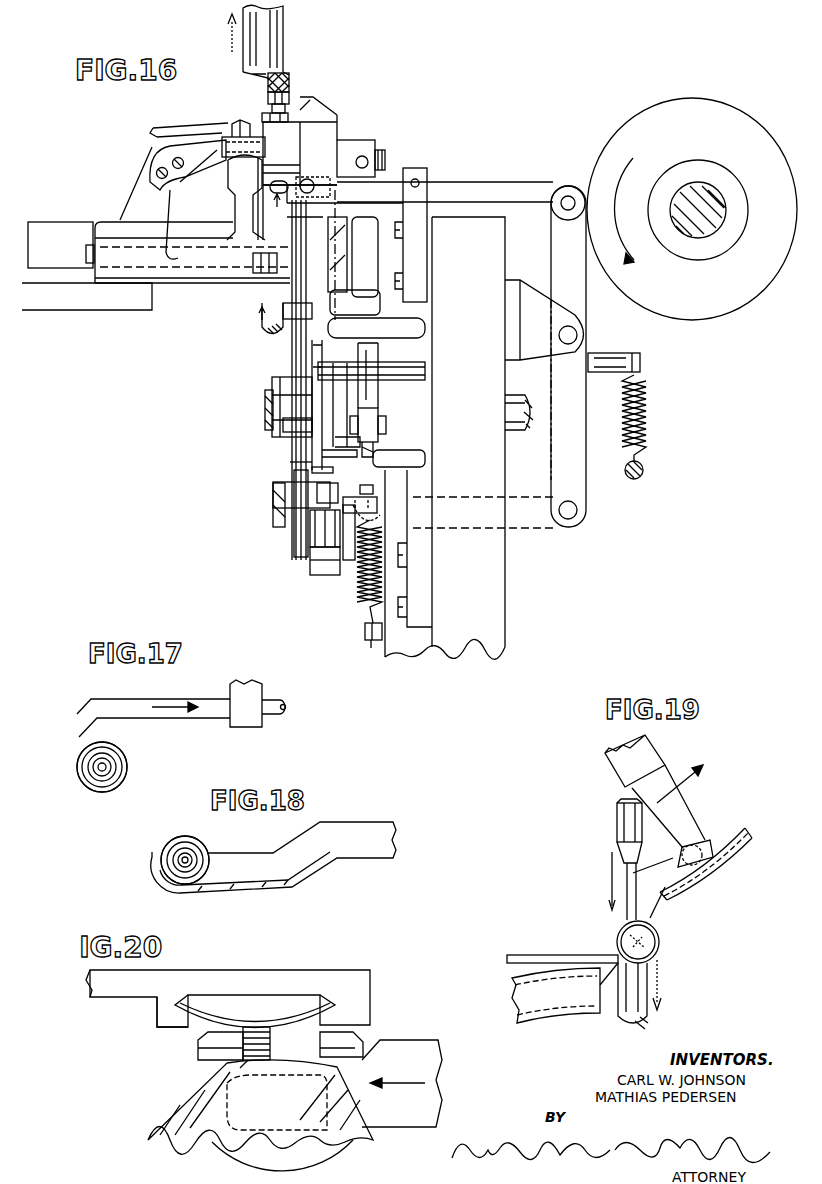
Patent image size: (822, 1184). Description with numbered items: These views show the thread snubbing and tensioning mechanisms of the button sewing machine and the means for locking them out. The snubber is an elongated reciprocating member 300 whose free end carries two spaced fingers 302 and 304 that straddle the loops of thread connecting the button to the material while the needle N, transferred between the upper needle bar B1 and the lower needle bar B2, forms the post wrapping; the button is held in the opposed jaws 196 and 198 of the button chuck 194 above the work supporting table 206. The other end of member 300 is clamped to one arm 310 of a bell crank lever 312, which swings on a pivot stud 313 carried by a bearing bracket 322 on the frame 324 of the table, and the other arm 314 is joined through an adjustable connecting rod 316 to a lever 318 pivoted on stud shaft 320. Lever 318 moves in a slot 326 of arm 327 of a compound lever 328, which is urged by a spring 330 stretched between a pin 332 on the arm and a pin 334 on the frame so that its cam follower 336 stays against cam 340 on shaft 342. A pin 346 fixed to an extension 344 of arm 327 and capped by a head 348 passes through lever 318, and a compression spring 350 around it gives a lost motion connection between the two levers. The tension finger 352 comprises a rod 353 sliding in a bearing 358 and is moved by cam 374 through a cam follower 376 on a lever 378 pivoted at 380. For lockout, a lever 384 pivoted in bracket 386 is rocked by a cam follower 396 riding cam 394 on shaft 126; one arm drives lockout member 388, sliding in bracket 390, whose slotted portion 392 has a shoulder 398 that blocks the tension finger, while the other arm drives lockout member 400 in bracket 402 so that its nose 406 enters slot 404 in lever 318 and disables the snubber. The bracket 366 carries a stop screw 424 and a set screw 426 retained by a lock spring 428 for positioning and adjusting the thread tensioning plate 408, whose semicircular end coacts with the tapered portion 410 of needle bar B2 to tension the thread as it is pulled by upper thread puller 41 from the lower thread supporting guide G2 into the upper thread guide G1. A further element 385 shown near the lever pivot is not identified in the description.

In FIG. 16, the upper needle bar B1 is at (268, 40).
In FIG. 19, the upper needle bar B1 is at (626, 827).
In FIG. 16, the stop screw 424 is at (268, 97).
In FIG. 16, the adjustable set screw 426 is at (289, 82).
In FIG. 16, the lock spring 428 is at (316, 101).
In FIG. 16, the bracket 366 is at (302, 163).
In FIG. 16, the shoulder 398 is at (333, 126).
In FIG. 16, the snubber member 300 is at (253, 110).
In FIG. 20, the snubber member 300 is at (413, 1062).
In FIG. 16, the slotted portion 392 is at (298, 185).
In FIG. 16, the bracket 390 is at (421, 176).
In FIG. 16, the lockout member 388 is at (493, 192).
In FIG. 16, the cam follower 396 is at (576, 176).
In FIG. 16, the cam 394 is at (669, 105).
In FIG. 16, the shaft 126 is at (712, 230).
In FIG. 16, the needle N is at (240, 179).
In FIG. 16, the arm 310 is at (241, 212).
In FIG. 16, the tension finger 352 is at (279, 201).
In FIG. 17, the tension finger 352 is at (278, 718).
In FIG. 16, the rod 353 is at (333, 199).
In FIG. 17, the rod 353 is at (114, 705).
In FIG. 16, the frame 324 is at (72, 235).
In FIG. 16, the pivot stud 313 is at (84, 250).
In FIG. 16, the bearing bracket 322 is at (183, 280).
In FIG. 16, the arm 314 is at (222, 280).
In FIG. 16, the bell crank lever 312 is at (212, 297).
In FIG. 16, the work supporting table 206 is at (97, 305).
In FIG. 16, the lower needle bar B2 is at (262, 314).
In FIG. 17, the lower needle bar B2 is at (128, 766).
In FIG. 18, the lower needle bar B2 is at (165, 845).
In FIG. 19, the lower needle bar B2 is at (628, 1009).
In FIG. 16, the adjustable connecting rod 316 is at (290, 364).
In FIG. 16, the cam 340 is at (280, 390).
In FIG. 16, the shaft 342 is at (272, 410).
In FIG. 16, the cam follower 336 is at (286, 462).
In FIG. 16, the slot 404 is at (282, 486).
In FIG. 16, the stud shaft 320 is at (278, 521).
In FIG. 16, the lever 318 is at (300, 527).
In FIG. 16, the arm 327 is at (372, 486).
In FIG. 16, the slot 326 is at (308, 562).
In FIG. 16, the extension 344 is at (310, 570).
In FIG. 16, the compression spring 350 is at (352, 562).
In FIG. 16, the spring 330 is at (368, 608).
In FIG. 16, the pin 334 is at (374, 640).
In FIG. 16, the pin 346 is at (378, 548).
In FIG. 16, the bracket 402 is at (420, 602).
In FIG. 16, the lockout member 400 is at (527, 520).
In FIG. 16, the lever 378 is at (333, 328).
In FIG. 16, the pivot 380 is at (322, 356).
In FIG. 16, the cam 374 is at (372, 405).
In FIG. 16, the cam follower 376 is at (372, 440).
In FIG. 16, the compound lever 328 is at (378, 452).
In FIG. 16, the head 348 is at (350, 472).
In FIG. 16, the pin 332 is at (375, 496).
In FIG. 16, the nose 406 is at (378, 514).
In FIG. 16, the bracket 386 is at (592, 334).
In FIG. 16, the spring 385 is at (648, 445).
In FIG. 16, the lever 384 is at (587, 478).
In FIG. 17, the bearing 358 is at (246, 718).
In FIG. 17, the tapered portion 410 is at (93, 792).
In FIG. 18, the tapered portion 410 is at (207, 849).
In FIG. 18, the thread tensioning plate 408 is at (372, 831).
In FIG. 19, the thread tensioning plate 408 is at (582, 958).
In FIG. 19, the upper thread puller 41 is at (677, 812).
In FIG. 19, the upper thread guide G1 is at (740, 852).
In FIG. 19, the lower thread supporting guide G2 is at (567, 992).
In FIG. 20, the button chuck 194 is at (330, 963).
In FIG. 20, the jaw 198 is at (362, 1008).
In FIG. 20, the jaw 196 is at (160, 1015).
In FIG. 20, the finger 304 is at (353, 1040).
In FIG. 20, the finger 302 is at (220, 1046).